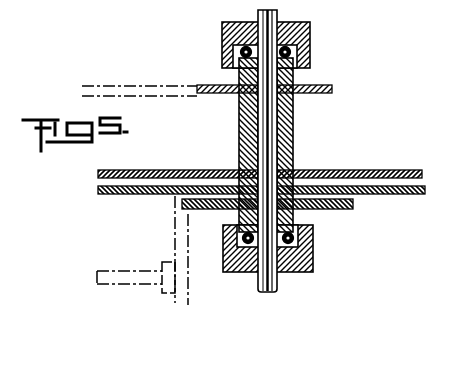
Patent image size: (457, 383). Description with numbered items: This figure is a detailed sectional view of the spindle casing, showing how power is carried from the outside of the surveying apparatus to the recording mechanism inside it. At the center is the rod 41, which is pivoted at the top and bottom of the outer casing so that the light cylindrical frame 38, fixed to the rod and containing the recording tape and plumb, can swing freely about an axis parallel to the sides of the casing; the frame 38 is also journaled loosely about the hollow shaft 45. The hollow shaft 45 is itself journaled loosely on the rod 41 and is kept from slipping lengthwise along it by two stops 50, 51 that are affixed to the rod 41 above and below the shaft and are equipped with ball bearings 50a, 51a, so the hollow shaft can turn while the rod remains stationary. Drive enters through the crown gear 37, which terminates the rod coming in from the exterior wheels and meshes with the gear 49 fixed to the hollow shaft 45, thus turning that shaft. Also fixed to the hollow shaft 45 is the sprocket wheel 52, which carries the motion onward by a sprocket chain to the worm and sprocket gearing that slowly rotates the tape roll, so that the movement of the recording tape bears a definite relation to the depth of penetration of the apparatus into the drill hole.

The crown gear 37 is at (175, 233).
The cylindrical frame 38 is at (408, 169).
The rod 41 is at (279, 284).
The hollow shaft 45 is at (293, 125).
The gear 49 is at (353, 206).
The stop 50 is at (314, 268).
The ball bearings 50a is at (236, 262).
The stop 51 is at (311, 26).
The ball bearings 51a is at (233, 50).
The sprocket wheel 52 is at (333, 85).